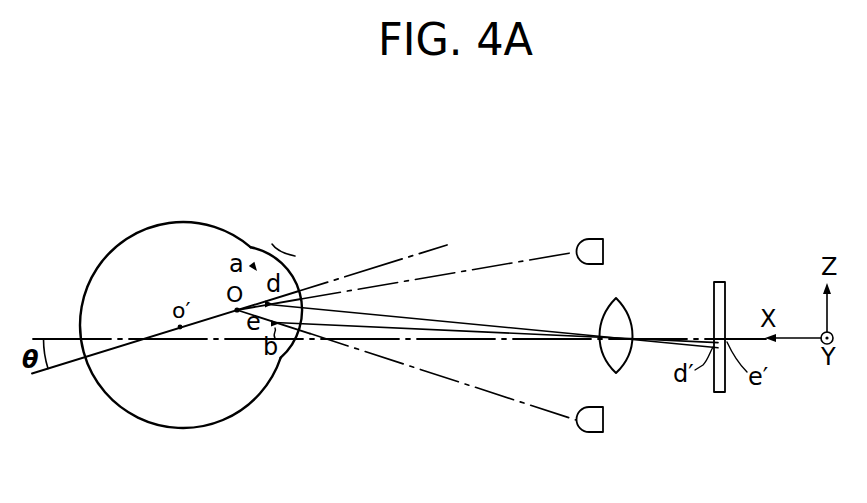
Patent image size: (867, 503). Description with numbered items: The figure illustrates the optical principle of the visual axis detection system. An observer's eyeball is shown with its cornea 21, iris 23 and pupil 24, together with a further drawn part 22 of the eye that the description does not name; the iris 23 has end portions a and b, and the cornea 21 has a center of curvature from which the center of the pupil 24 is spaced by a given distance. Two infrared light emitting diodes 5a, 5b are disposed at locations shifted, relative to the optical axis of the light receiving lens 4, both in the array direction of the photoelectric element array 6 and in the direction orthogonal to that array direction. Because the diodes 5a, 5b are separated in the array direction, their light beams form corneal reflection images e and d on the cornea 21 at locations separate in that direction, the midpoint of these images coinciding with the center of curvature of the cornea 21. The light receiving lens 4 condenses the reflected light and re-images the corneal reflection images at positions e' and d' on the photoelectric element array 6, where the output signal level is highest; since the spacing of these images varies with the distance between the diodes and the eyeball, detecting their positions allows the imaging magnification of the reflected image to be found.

The cornea 21 is at (257, 284).
The cornea 22 is at (228, 235).
The iris 23 is at (254, 268).
The pupil 24 is at (295, 256).
The light receiving lens 4 is at (616, 373).
The infrared light emitting diode 5a is at (597, 433).
The infrared light emitting diode 5b is at (598, 239).
The photoelectric element array 6 is at (721, 281).